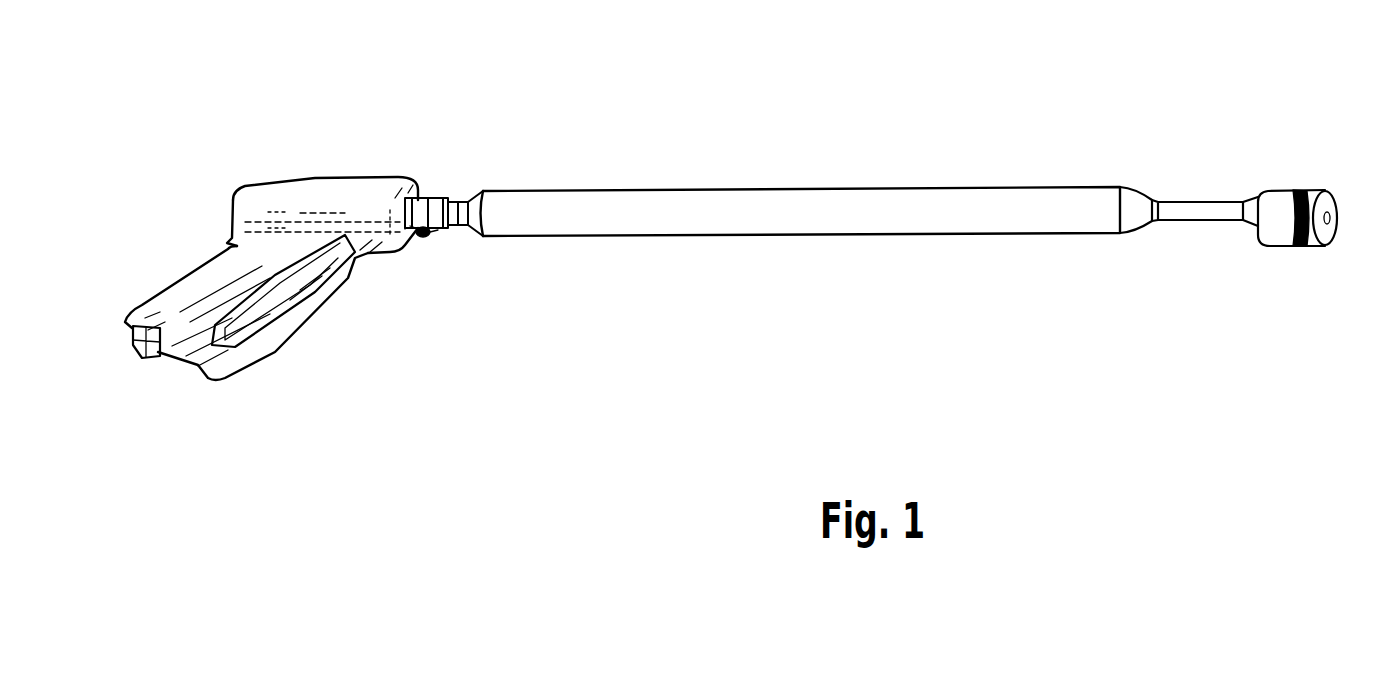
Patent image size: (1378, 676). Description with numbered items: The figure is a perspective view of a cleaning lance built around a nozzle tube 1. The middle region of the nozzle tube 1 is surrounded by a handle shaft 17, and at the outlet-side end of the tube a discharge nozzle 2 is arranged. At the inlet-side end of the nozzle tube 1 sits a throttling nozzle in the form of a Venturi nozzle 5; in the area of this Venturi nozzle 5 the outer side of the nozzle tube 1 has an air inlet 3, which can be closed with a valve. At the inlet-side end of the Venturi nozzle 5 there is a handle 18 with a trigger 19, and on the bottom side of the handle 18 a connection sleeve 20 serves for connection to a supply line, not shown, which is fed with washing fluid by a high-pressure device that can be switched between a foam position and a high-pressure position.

The nozzle tube 1 is at (786, 215).
The discharge nozzle 2 is at (1280, 208).
The air inlet 3 is at (440, 240).
The Venturi nozzle 5 is at (440, 205).
The handle shaft 17 is at (1061, 214).
The handle 18 is at (305, 193).
The trigger 19 is at (272, 283).
The connection sleeve 20 is at (145, 365).